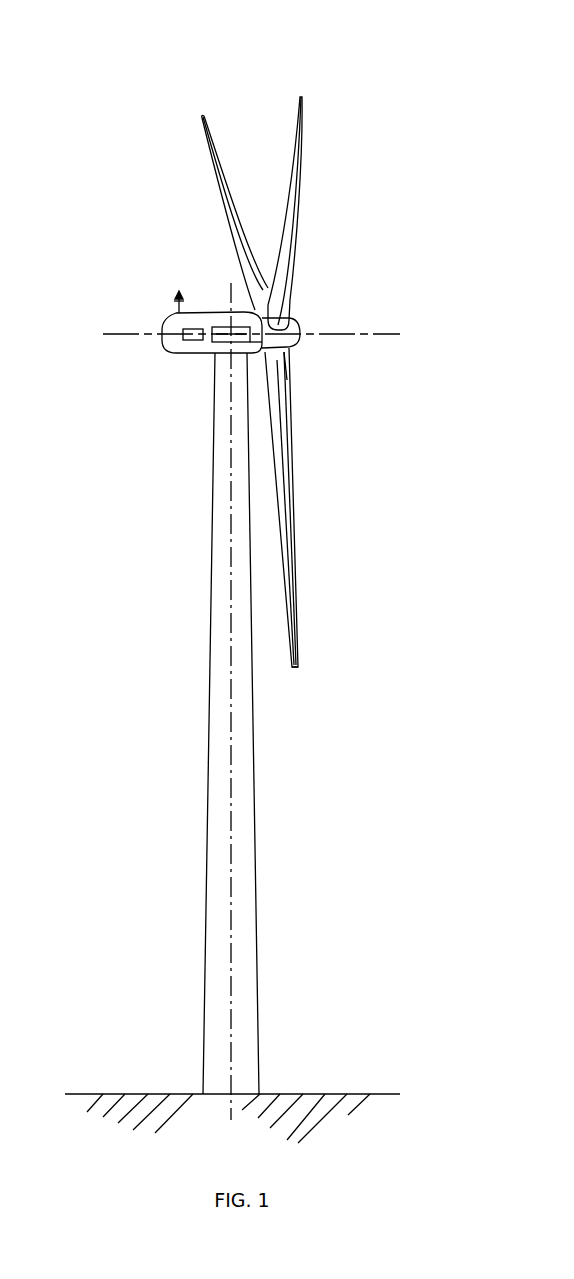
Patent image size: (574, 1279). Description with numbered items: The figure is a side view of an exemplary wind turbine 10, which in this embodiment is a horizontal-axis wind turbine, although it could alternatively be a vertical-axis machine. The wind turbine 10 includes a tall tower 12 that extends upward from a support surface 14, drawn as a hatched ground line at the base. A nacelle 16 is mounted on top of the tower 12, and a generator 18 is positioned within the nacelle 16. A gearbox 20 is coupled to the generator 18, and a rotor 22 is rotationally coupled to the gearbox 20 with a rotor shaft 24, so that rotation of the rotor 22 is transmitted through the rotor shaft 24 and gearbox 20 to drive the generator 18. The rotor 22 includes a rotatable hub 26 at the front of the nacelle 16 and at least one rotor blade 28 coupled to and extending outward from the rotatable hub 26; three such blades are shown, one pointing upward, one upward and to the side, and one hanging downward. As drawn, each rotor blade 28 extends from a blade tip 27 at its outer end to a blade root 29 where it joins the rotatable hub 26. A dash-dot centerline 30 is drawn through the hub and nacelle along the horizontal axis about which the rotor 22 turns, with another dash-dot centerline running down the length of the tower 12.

The wind turbine 10 is at (343, 60).
The tower 12 is at (205, 815).
The support surface 14 is at (137, 1093).
The nacelle 16 is at (192, 355).
The generator 18 is at (183, 333).
The gearbox 20 is at (218, 320).
The rotor 22 is at (307, 304).
The rotor shaft 24 is at (259, 354).
The rotatable hub 26 is at (303, 340).
The blade tip 27 is at (295, 667).
The rotor blade 28 is at (297, 103).
The blade root 29 is at (292, 382).
The rotor axis 30 is at (380, 338).